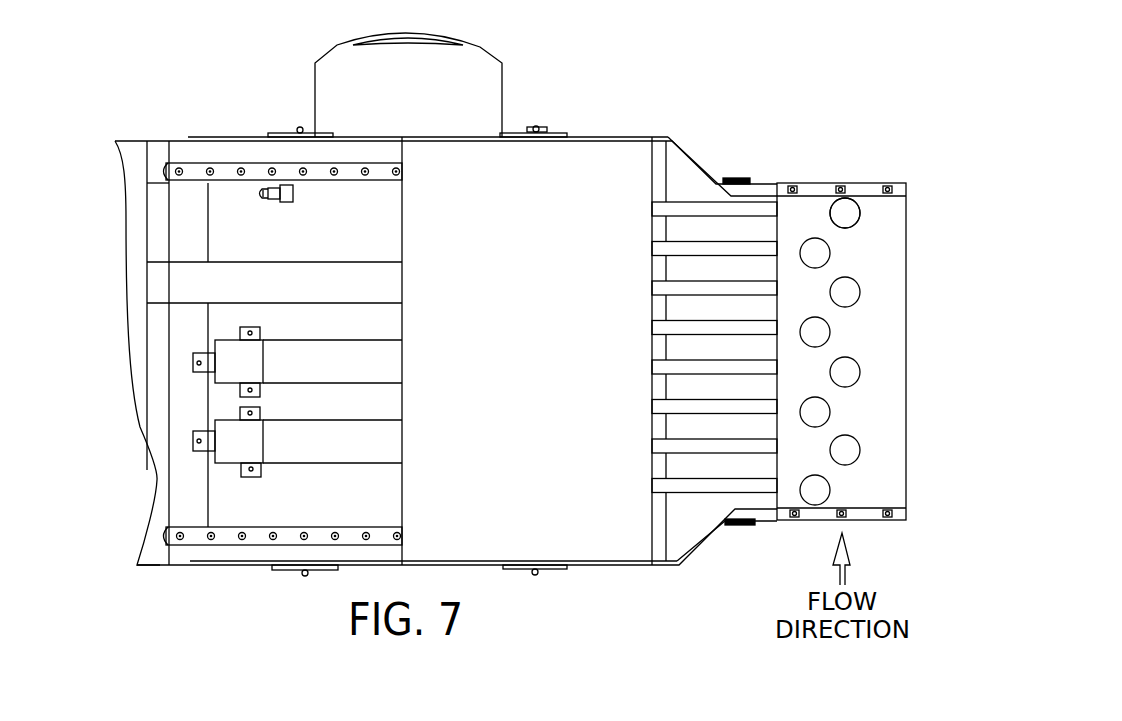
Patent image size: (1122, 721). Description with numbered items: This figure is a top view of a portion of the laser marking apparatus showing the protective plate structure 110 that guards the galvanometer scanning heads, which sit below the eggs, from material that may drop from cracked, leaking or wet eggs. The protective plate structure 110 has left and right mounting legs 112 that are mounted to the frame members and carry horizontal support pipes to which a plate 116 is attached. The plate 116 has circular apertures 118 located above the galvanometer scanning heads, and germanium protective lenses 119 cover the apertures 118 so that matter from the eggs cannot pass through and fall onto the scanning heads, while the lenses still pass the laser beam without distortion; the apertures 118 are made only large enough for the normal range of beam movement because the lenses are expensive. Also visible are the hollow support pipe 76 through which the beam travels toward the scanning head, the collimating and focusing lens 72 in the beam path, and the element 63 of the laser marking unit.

The housing cover 63 is at (602, 162).
The mounting legs 112 is at (676, 134).
The hollow support pipe 76 is at (693, 212).
The collimating and focusing lens 72 is at (697, 487).
The germanium protective lenses 119 is at (840, 212).
The circular apertures 118 is at (858, 219).
The plate 116 is at (875, 328).
The protective plate structure 110 is at (800, 338).